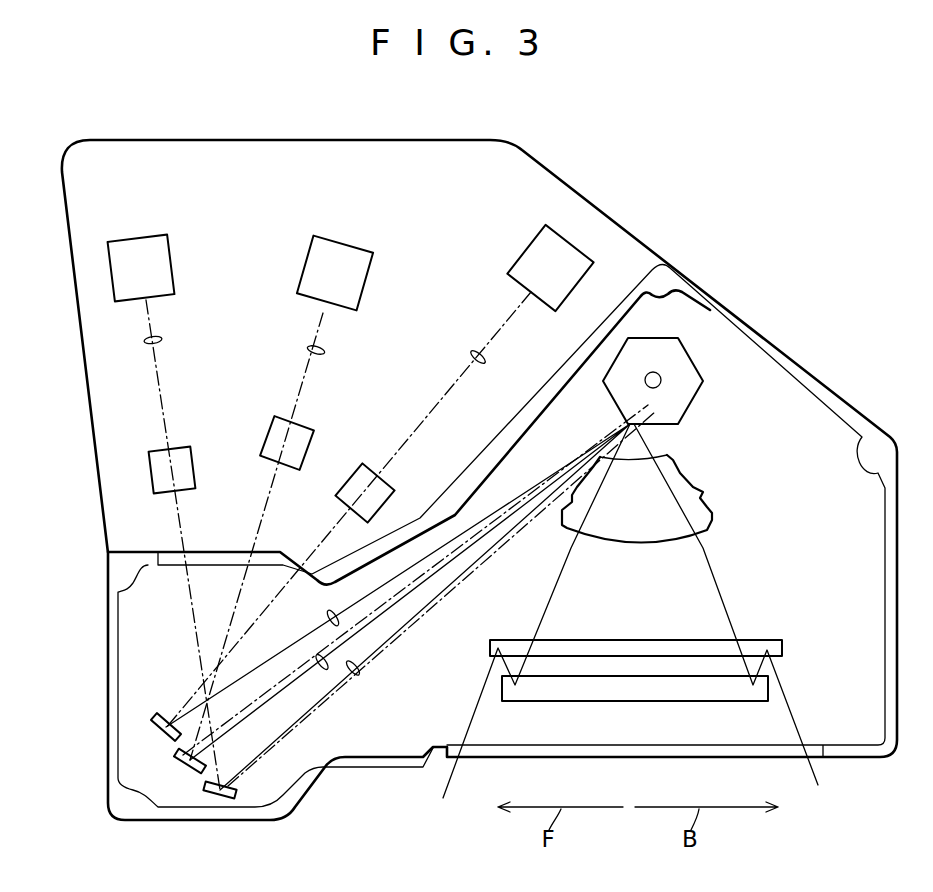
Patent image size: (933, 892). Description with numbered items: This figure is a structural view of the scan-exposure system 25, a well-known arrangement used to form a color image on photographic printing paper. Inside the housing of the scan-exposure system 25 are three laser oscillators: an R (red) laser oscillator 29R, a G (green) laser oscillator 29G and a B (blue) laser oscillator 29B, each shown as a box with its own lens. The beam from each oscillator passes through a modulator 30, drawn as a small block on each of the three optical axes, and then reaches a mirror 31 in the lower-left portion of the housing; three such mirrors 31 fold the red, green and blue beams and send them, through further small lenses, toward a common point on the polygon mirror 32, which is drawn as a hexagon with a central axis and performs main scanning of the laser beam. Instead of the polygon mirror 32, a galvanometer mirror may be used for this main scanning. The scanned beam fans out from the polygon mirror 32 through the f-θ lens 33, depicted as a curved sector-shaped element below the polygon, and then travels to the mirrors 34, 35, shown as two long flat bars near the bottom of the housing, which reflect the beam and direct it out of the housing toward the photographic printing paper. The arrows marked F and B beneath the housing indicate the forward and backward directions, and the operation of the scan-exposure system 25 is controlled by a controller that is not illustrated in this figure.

The scan-exposure system 25 is at (641, 201).
The B (blue) laser oscillator 29B is at (153, 238).
The G (green) laser oscillator 29G is at (355, 248).
The R (red) laser oscillator 29R is at (520, 258).
The modulator 30 is at (266, 432).
The mirror 31 is at (164, 745).
The polygon mirror 32 is at (690, 352).
The f-θ lens 33 is at (703, 493).
The mirror 34 is at (784, 650).
The mirror 35 is at (671, 702).